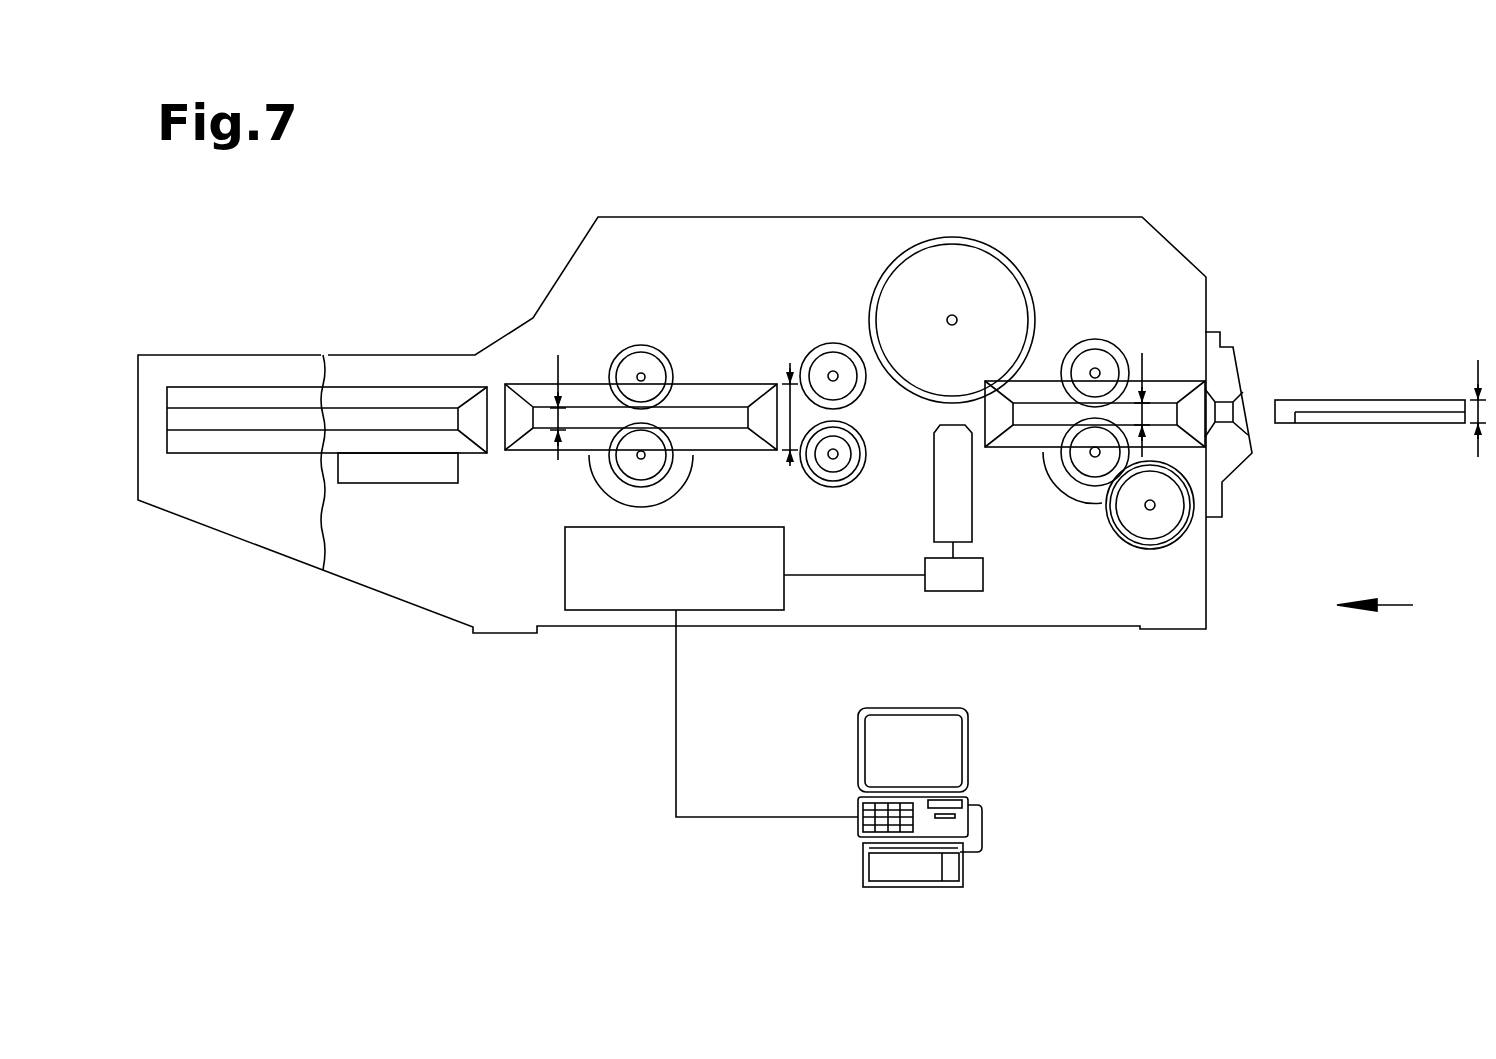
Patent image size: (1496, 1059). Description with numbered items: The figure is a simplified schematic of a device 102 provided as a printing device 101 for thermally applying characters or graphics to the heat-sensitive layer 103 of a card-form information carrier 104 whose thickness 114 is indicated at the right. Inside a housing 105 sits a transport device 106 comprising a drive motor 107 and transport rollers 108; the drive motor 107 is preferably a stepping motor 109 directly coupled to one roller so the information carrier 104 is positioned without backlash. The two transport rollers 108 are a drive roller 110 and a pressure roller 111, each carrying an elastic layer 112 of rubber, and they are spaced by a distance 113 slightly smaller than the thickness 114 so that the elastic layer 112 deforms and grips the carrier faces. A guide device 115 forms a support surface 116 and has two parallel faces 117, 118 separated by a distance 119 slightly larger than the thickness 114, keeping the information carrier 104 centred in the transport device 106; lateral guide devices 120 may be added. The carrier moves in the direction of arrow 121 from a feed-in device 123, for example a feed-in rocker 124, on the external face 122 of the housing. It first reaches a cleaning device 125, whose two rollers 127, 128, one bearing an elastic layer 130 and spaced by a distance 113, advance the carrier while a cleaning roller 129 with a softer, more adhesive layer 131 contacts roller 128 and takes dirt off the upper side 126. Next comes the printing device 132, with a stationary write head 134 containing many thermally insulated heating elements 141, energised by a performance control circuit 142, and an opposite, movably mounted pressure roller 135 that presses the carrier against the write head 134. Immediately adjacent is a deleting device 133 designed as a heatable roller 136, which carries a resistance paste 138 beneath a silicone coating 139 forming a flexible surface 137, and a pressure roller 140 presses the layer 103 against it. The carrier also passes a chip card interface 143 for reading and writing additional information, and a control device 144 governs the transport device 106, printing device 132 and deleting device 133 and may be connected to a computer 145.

The printing device 101 is at (780, 355).
The device 102 is at (458, 265).
The heat-sensitive layer 103 is at (1413, 415).
The information carrier 104 is at (1360, 370).
The housing 105 is at (627, 255).
The transport device 106 is at (588, 310).
The drive motor 107 is at (598, 517).
The transport rollers 108 is at (587, 350).
The stepping motor 109 is at (603, 482).
The drive roller 110 is at (645, 478).
The pressure roller 111 is at (642, 365).
The elastic layer 112 is at (630, 346).
The distance 113 is at (558, 356).
The thickness 114 is at (1475, 460).
The guide device 115 is at (717, 350).
The support surface 116 is at (680, 424).
The face 117 is at (583, 397).
The face 118 is at (710, 437).
The distance 119 is at (790, 370).
The lateral guide devices 120 is at (1197, 343).
The arrow 121 is at (1393, 607).
The external face 122 is at (1217, 557).
The feed-in device 123 is at (1262, 342).
The feed-in rocker 124 is at (1227, 448).
The cleaning device 125 is at (1089, 288).
The upper side 126 is at (1295, 397).
The roller 127 is at (1095, 357).
The roller 128 is at (1097, 463).
The cleaning roller 129 is at (1147, 523).
The elastic layer 130 is at (1120, 353).
The layer 131 is at (1182, 528).
The printing device 132 is at (982, 223).
The deleting device 133 is at (822, 277).
The write head 134 is at (958, 505).
The pressure roller 135 is at (983, 278).
The heatable roller 136 is at (832, 490).
The flexible surface 137 is at (838, 485).
The resistance paste 138 is at (840, 485).
The coating 139 is at (862, 453).
The pressure roller 140 is at (830, 360).
The heating elements 141 is at (957, 422).
The performance control circuit 142 is at (962, 577).
The chip card interface 143 is at (295, 357).
The control device 144 is at (710, 578).
The computer 145 is at (987, 773).